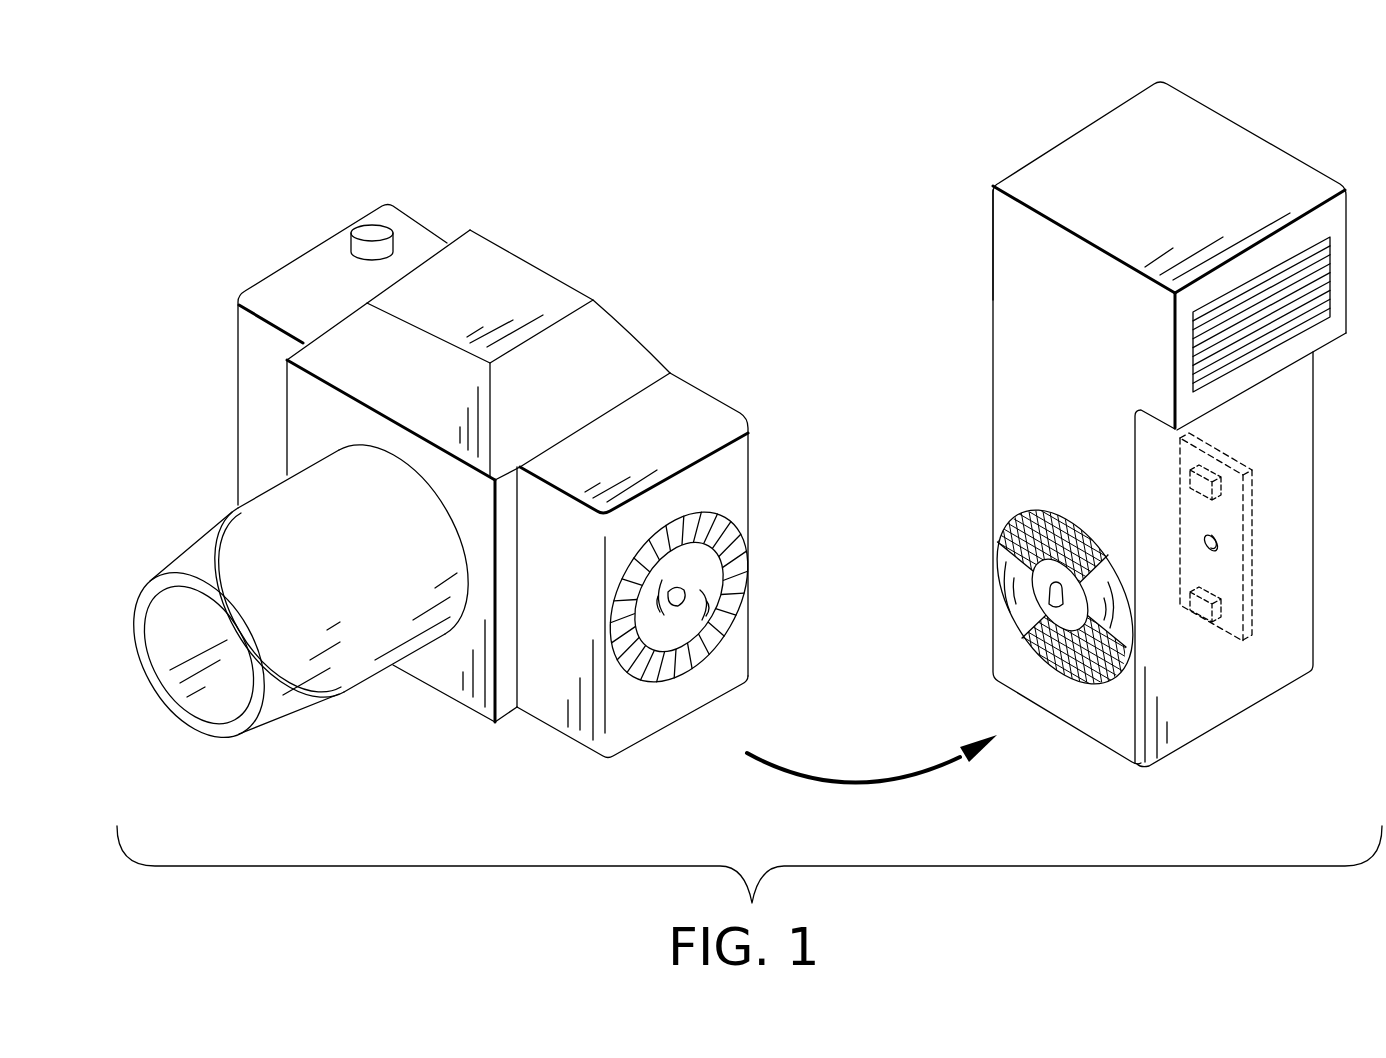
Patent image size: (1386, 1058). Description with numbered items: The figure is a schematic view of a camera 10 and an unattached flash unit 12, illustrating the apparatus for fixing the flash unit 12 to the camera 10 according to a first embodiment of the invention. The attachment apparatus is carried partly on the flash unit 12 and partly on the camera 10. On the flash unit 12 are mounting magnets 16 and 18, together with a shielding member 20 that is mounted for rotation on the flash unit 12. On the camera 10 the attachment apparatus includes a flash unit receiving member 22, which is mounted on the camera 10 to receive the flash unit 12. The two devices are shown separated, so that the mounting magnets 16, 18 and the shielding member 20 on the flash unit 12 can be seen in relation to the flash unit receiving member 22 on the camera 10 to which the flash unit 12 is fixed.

The camera 10 is at (553, 292).
The flash unit 12 is at (1101, 127).
The mounting magnet 16 is at (1235, 455).
The mounting magnet 18 is at (1194, 618).
The shielding member 20 is at (990, 545).
The flash unit receiving member 22 is at (708, 653).